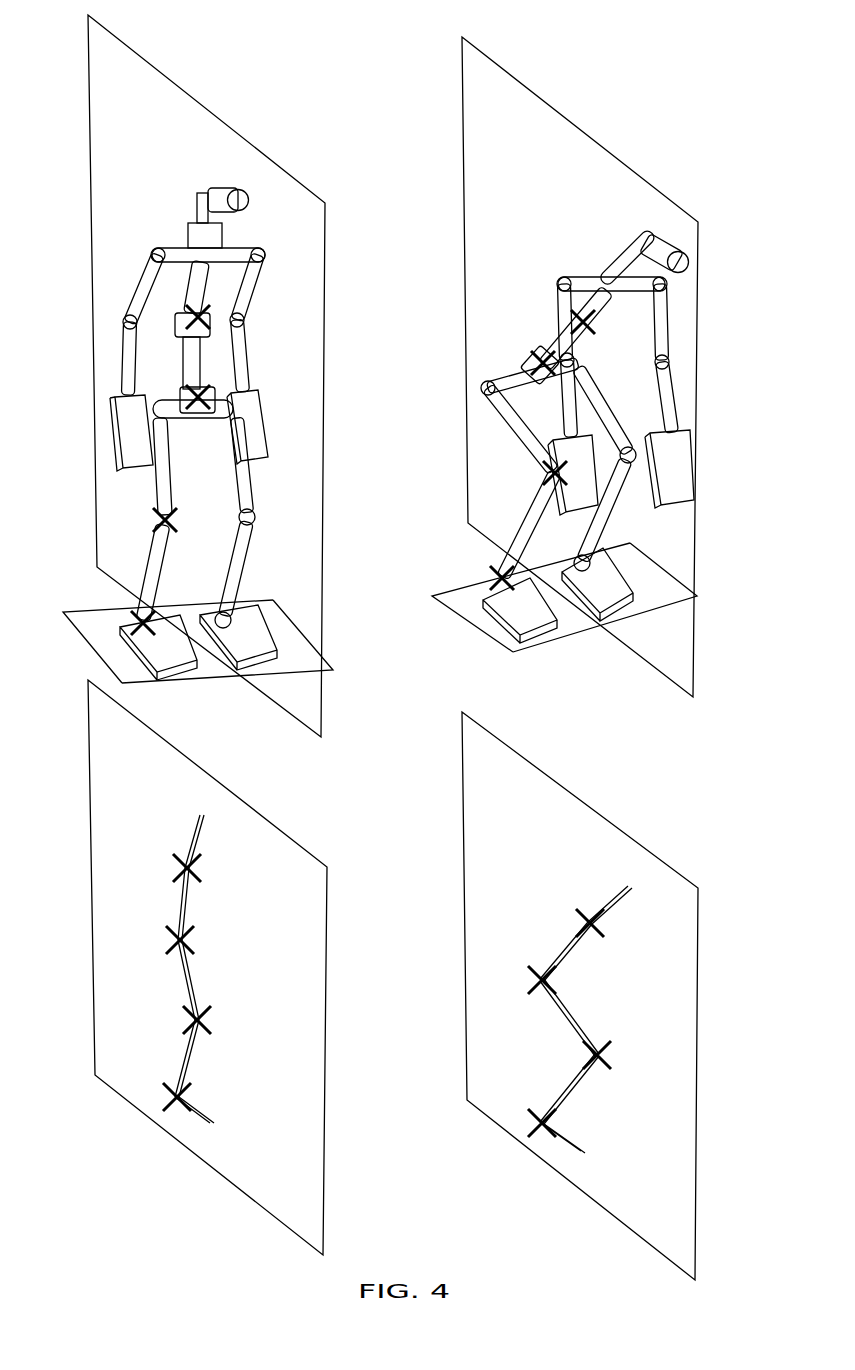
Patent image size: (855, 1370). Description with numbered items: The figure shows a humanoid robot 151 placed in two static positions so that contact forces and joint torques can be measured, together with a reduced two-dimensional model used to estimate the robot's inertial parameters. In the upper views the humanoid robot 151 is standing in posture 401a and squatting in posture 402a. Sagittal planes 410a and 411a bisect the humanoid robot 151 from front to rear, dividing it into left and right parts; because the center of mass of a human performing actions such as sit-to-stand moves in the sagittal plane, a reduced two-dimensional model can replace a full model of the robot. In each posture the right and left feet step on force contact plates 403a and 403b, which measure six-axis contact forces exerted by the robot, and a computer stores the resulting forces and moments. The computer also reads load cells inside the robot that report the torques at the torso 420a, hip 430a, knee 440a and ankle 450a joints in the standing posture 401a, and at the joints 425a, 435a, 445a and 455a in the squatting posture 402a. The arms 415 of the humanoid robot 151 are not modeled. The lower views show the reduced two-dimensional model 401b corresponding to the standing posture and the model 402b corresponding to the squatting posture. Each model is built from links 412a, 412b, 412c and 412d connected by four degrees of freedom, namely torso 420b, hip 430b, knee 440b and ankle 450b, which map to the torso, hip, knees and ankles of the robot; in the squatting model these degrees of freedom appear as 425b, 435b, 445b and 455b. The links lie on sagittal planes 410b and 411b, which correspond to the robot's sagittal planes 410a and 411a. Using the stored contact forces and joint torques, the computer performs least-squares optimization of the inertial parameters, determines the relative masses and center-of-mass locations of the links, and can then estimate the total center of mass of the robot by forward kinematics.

The sagittal plane 410a is at (268, 150).
The sagittal plane 411a is at (620, 192).
The humanoid robot 151 is at (243, 200).
The arms 415 is at (130, 357).
The torso joint 420a is at (203, 314).
The hip joint 430a is at (205, 395).
The knee joint 440a is at (170, 518).
The ankle joint 450a is at (150, 620).
The joint 425a is at (592, 318).
The joint 435a is at (555, 360).
The joint 445a is at (560, 470).
The joint 455a is at (515, 565).
The force contact plate 403a is at (100, 635).
The force contact plate 403b is at (300, 655).
The standing posture 401a is at (232, 713).
The squatting posture 402a is at (628, 705).
The sagittal plane 410b is at (262, 830).
The sagittal plane 411b is at (652, 880).
The reduced 2D model of standing posture 401b is at (225, 1215).
The reduced 2D model of squatting posture 402b is at (557, 1227).
The link 412a is at (200, 822).
The link 412b is at (182, 901).
The link 412c is at (183, 979).
The link 412d is at (186, 1054).
The torso degree of freedom 420b is at (193, 870).
The hip degree of freedom 430b is at (186, 942).
The knee degree of freedom 440b is at (202, 1020).
The ankle degree of freedom 450b is at (184, 1097).
The projected waist joint (second posture) 425b is at (598, 930).
The projected hip joint (second posture) 435b is at (548, 981).
The projected knee joint (second posture) 445b is at (605, 1056).
The projected ankle joint (second posture) 455b is at (553, 1125).